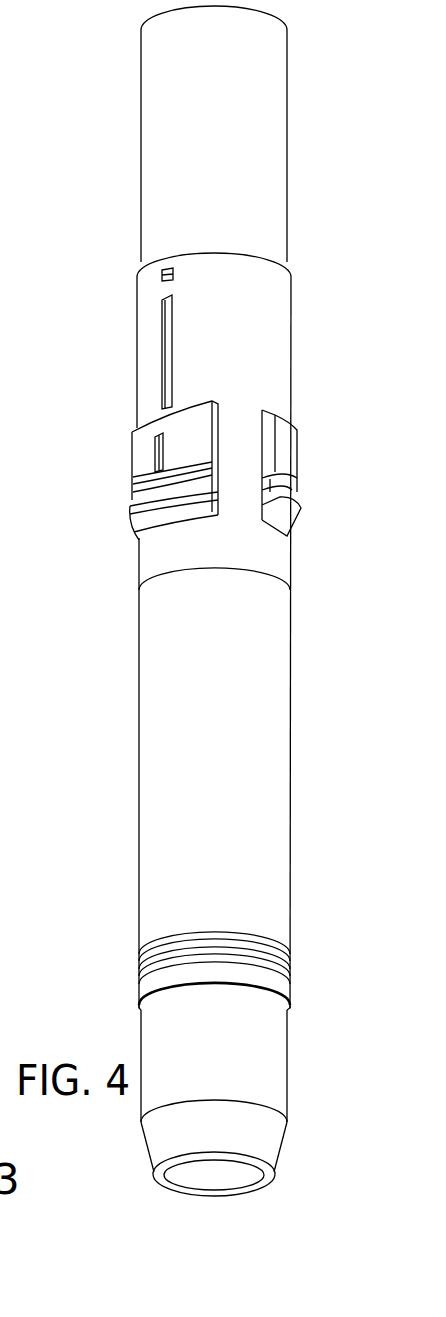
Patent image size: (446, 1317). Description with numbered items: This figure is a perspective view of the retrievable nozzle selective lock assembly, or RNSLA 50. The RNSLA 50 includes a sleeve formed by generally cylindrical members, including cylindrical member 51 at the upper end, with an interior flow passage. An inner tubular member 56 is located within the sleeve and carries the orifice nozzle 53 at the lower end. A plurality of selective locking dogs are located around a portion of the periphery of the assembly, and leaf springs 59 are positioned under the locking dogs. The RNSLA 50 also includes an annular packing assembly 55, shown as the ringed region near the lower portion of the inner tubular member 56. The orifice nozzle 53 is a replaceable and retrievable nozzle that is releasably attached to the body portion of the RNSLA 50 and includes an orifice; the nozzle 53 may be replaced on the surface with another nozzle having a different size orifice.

The retrievable nozzle selective lock assembly 50 is at (311, 1047).
The cylindrical member 51 is at (270, 152).
The orifice nozzle 53 is at (153, 1146).
The annular packing assembly 55 is at (142, 962).
The inner tubular member 56 is at (138, 790).
The leaf springs 59 is at (165, 369).